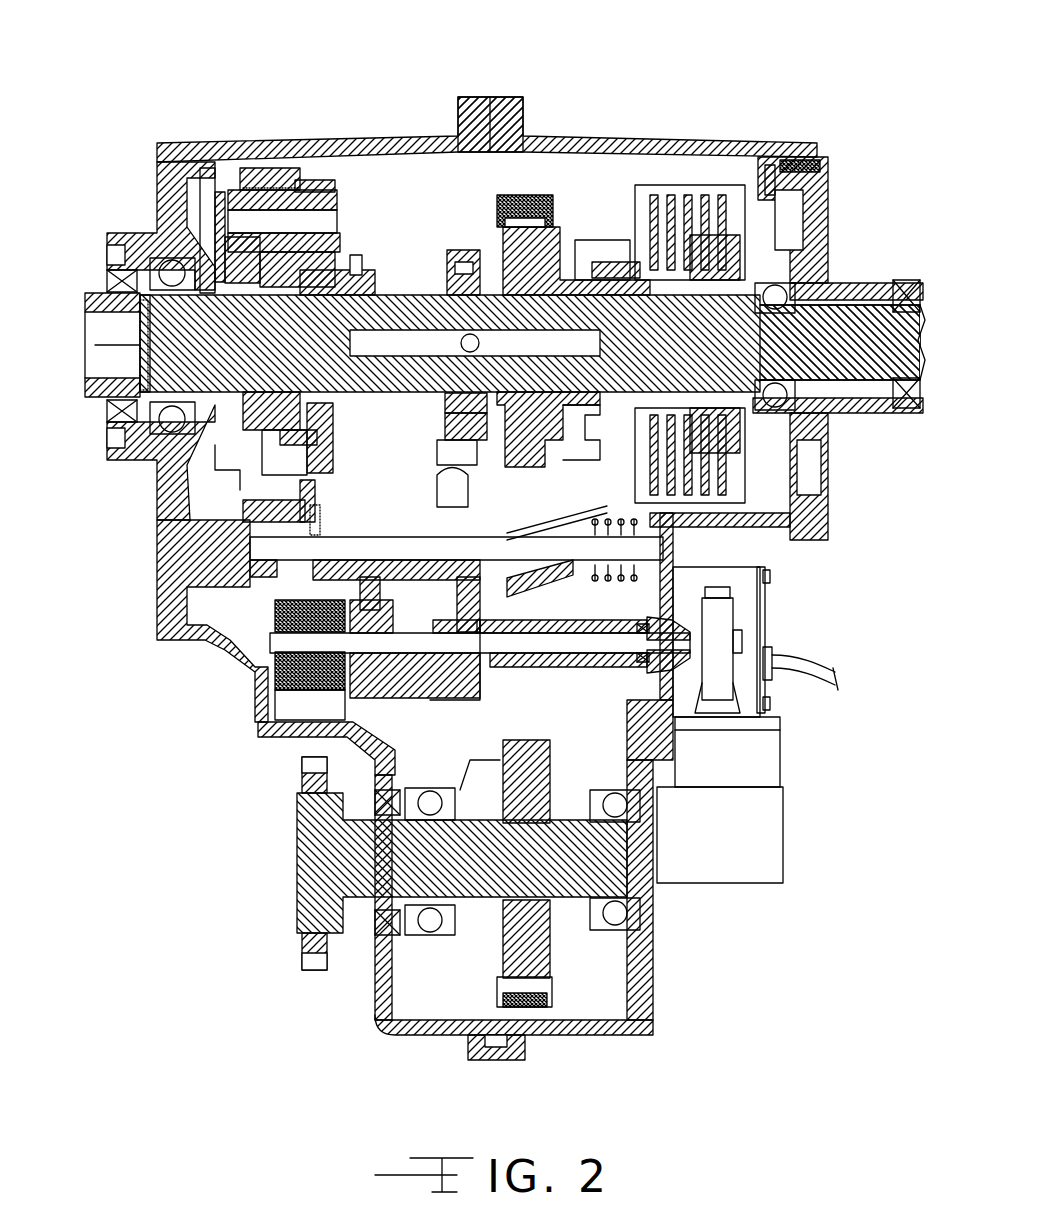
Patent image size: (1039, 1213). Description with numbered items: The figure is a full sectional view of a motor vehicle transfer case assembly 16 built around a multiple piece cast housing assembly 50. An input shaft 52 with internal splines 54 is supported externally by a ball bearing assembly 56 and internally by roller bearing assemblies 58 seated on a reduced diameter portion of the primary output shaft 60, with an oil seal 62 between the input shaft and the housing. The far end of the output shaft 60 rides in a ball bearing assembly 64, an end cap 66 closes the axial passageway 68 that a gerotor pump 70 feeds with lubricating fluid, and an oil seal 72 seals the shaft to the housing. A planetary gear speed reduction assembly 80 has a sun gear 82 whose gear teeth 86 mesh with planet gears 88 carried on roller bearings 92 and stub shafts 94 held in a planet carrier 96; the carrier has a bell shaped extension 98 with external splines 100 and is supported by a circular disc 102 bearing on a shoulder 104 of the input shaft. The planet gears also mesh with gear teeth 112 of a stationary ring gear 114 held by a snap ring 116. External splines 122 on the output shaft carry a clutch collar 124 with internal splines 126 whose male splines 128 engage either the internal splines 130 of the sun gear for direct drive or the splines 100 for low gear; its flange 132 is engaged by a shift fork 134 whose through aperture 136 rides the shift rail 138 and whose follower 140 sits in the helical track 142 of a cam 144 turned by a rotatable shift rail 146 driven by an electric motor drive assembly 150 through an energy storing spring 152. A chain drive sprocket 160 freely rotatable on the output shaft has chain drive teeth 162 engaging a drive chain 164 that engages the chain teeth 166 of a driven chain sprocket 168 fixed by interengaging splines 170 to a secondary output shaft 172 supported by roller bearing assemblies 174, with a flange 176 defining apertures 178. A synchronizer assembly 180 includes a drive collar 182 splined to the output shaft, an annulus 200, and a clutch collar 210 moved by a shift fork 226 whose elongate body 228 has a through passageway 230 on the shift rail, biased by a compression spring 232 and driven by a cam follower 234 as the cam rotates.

The transfer case assembly 16 is at (615, 112).
The housing assembly 50 is at (512, 118).
The input shaft 52 is at (95, 293).
The internal splines 54 is at (115, 352).
The ball bearing assembly 56 is at (135, 428).
The roller bearing assemblies 58 is at (250, 312).
The primary output shaft 60 is at (848, 360).
The oil seal 62 is at (105, 415).
The ball bearing assembly 64 is at (782, 292).
The end cap 66 is at (120, 330).
The axial passageway 68 is at (345, 353).
The gerotor pump 70 is at (445, 262).
The oil seal 72 is at (905, 280).
The planetary gear speed reduction assembly 80 is at (182, 138).
The sun gear 82 is at (228, 470).
The gear teeth 86 is at (256, 440).
The planet gears 88 is at (283, 185).
The roller bearings 92 is at (337, 180).
The stub shafts 94 is at (310, 218).
The planet carrier 96 is at (318, 245).
The bell shaped extension 98 is at (338, 272).
The external splines 100 is at (362, 275).
The circular disc 102 is at (160, 485).
The shoulder 104 is at (260, 395).
The gear teeth 112 is at (253, 505).
The stationary ring gear 114 is at (162, 538).
The snap ring 116 is at (320, 495).
The external splines 122 is at (395, 395).
The clutch collar 124 is at (305, 410).
The internal splines 126 is at (225, 262).
The male splines 128 is at (200, 210).
The internal splines 130 is at (255, 270).
The flange 132 is at (375, 425).
The shift fork 134 is at (382, 465).
The through aperture 136 is at (462, 537).
The shift rail 138 is at (452, 565).
The follower 140 is at (345, 585).
The helical track 142 is at (375, 680).
The cam 144 is at (460, 670).
The shift rail 146 is at (568, 660).
The electric motor drive assembly 150 is at (775, 615).
The energy storing spring 152 is at (275, 680).
The chain drive sprocket 160 is at (545, 240).
The chain drive teeth 162 is at (530, 470).
The drive chain 164 is at (530, 198).
The chain teeth 166 is at (545, 745).
The driven chain sprocket 168 is at (500, 780).
The interengaging splines 170 is at (478, 935).
The secondary output shaft 172 is at (310, 850).
The roller bearing assemblies 174 is at (415, 920).
The flange 176 is at (300, 962).
The apertures 178 is at (300, 777).
The synchronizer assembly 180 is at (740, 130).
The drive collar 182 is at (775, 215).
The annulus 200 is at (672, 185).
The clutch collar 210 is at (585, 250).
The shift fork 226 is at (580, 455).
The elongate body 228 is at (512, 530).
The through passageway 230 is at (572, 588).
The compression spring 232 is at (680, 544).
The cam follower 234 is at (500, 592).